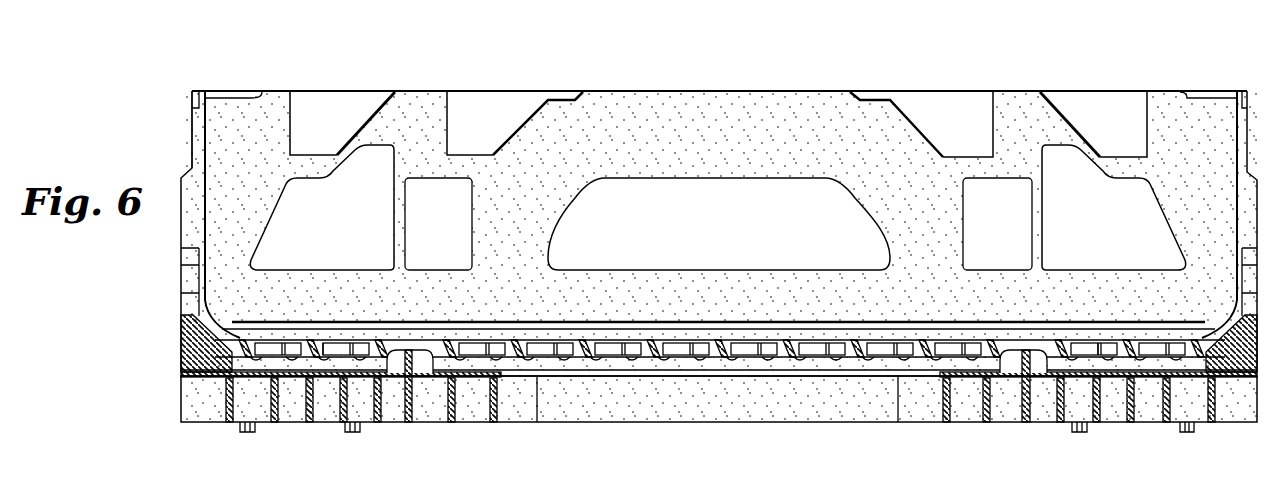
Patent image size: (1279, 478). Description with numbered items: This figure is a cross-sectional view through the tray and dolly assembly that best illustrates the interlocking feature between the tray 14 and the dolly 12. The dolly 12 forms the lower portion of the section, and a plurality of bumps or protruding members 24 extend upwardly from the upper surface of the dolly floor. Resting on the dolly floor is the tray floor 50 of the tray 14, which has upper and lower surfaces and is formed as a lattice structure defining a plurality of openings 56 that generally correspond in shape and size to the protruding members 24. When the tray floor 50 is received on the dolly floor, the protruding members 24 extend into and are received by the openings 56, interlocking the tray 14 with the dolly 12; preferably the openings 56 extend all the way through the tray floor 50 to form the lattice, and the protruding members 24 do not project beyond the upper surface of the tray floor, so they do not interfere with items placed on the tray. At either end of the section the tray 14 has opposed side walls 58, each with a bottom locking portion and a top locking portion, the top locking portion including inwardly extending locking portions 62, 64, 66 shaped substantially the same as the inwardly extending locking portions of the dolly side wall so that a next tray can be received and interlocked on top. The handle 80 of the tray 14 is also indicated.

The dolly 12 is at (178, 400).
The tray 14 is at (180, 340).
The protruding members 24 is at (431, 362).
The tray floor 50 is at (240, 335).
The openings 56 is at (331, 352).
The side walls 58 is at (192, 131).
The inwardly extending locking portion 62 is at (617, 88).
The inwardly extending locking portion 64 is at (365, 120).
The inwardly extending locking portion 66 is at (1070, 122).
The handle 80 is at (688, 213).